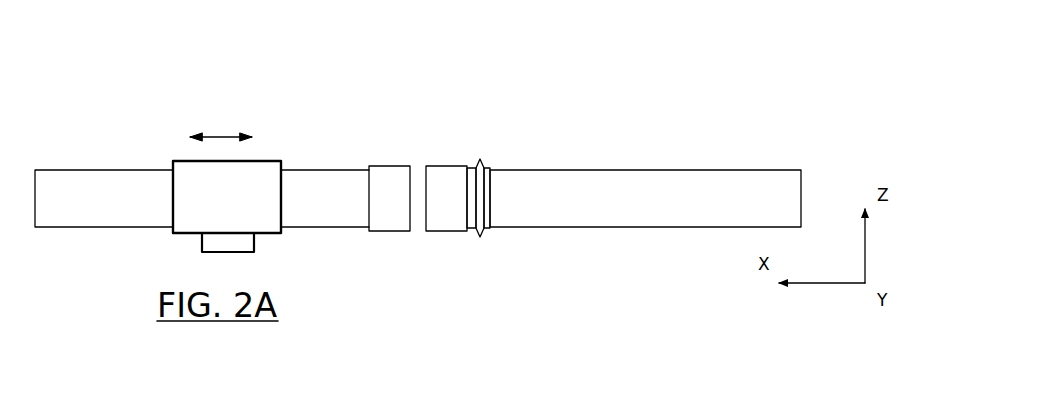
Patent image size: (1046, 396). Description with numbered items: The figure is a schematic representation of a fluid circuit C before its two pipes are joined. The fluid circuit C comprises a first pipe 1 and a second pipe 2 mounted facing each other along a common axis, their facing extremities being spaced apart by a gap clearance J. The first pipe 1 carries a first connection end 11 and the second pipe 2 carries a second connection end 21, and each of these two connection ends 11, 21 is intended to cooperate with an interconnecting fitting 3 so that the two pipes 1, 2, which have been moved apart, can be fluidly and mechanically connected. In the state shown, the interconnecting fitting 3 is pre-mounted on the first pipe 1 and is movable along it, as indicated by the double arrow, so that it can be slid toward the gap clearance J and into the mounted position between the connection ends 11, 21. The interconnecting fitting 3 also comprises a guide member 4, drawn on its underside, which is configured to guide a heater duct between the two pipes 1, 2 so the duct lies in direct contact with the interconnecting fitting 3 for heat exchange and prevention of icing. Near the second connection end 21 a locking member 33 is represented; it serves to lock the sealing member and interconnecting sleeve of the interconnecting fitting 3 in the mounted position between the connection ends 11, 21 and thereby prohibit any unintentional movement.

The first pipe 1 is at (57, 170).
The second pipe 2 is at (722, 170).
The interconnecting fitting 3 is at (265, 161).
The guide member 4 is at (256, 237).
The first connection end 11 is at (390, 166).
The second connection end 21 is at (445, 166).
The locking member 33 is at (481, 161).
The fluid circuit C is at (120, 99).
The gap clearance J is at (420, 164).